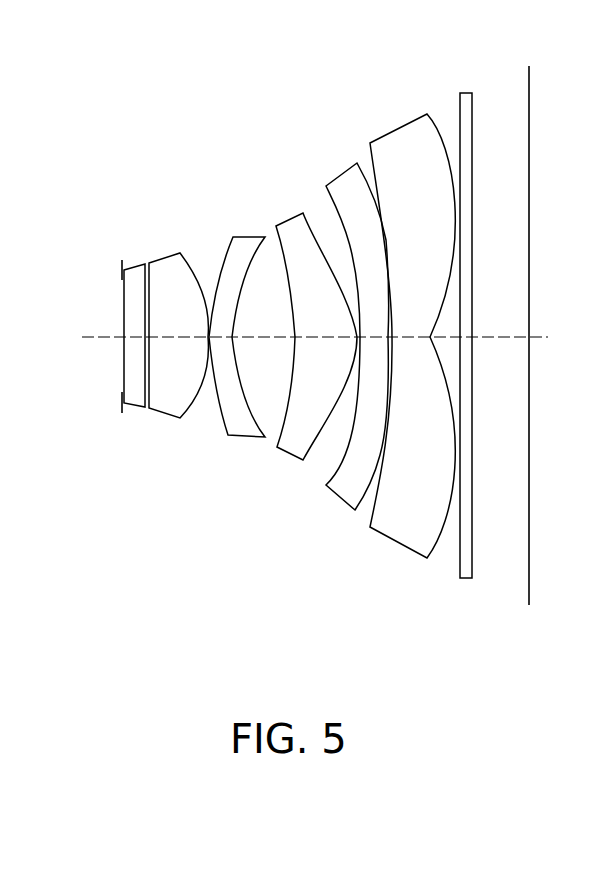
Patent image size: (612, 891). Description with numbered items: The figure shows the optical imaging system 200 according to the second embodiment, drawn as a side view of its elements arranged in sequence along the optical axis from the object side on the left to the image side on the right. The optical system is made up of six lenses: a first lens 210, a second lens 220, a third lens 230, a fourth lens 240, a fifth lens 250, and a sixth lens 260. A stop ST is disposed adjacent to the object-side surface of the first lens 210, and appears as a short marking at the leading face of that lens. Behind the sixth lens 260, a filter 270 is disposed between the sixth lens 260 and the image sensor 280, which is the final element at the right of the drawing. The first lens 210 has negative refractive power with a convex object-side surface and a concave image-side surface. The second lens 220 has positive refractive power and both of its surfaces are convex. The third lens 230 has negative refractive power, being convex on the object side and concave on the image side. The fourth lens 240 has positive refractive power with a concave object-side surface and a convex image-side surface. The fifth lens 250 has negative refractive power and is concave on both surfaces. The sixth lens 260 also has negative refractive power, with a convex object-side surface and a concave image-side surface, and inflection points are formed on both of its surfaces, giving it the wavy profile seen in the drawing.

The optical imaging system 200 is at (253, 103).
The stop ST is at (121, 268).
The first lens 210 is at (133, 408).
The second lens 220 is at (167, 417).
The third lens 230 is at (245, 438).
The fourth lens 240 is at (288, 457).
The fifth lens 250 is at (340, 498).
The sixth lens 260 is at (407, 553).
The filter 270 is at (460, 560).
The image sensor 280 is at (529, 585).